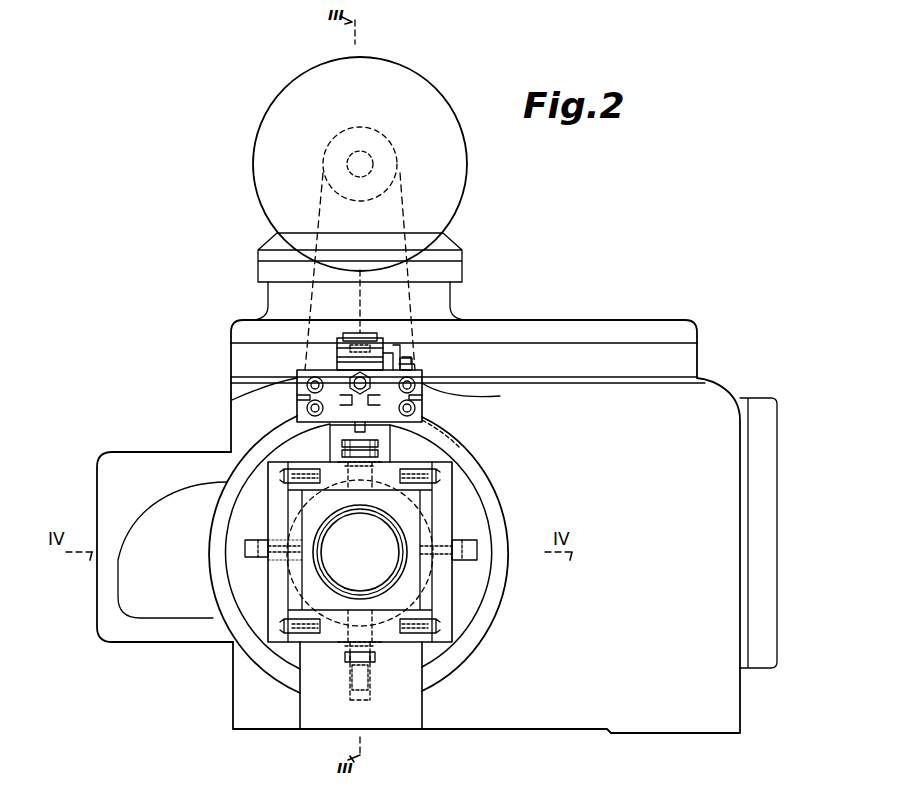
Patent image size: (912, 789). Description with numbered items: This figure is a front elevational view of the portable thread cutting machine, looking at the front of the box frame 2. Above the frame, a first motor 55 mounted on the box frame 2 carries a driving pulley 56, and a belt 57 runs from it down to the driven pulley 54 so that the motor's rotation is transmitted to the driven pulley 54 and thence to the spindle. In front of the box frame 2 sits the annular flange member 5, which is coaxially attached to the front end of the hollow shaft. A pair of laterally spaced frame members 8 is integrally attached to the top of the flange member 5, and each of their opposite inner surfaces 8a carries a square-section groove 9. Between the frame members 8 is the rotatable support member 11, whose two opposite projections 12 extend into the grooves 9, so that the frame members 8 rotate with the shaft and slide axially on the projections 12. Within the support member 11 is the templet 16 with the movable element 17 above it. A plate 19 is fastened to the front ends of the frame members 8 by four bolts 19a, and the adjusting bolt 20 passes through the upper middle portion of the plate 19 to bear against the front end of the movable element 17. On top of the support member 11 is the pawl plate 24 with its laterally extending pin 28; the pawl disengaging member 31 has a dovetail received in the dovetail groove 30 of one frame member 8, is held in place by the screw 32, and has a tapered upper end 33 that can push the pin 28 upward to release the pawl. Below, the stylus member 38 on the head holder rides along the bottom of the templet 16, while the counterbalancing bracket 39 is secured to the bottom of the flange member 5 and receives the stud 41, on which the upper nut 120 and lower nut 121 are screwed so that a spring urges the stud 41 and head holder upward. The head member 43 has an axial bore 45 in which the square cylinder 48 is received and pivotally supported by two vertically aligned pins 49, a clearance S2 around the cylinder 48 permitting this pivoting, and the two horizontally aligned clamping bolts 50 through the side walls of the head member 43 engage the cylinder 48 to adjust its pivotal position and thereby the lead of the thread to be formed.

The box frame 2 is at (672, 325).
The annular flange member 5 is at (482, 530).
The frame members 8 is at (467, 453).
The inner surfaces of the frame members 8a is at (268, 425).
The grooves 9 is at (298, 400).
The rotatable support member 11 is at (302, 413).
The projections 12 is at (300, 366).
The templet 16 is at (293, 443).
The movable element 17 is at (340, 330).
The plate 19 is at (430, 387).
The bolts 19a is at (298, 382).
The adjusting bolt 20 is at (353, 377).
The pawl plate 24 is at (360, 330).
The pin 28 is at (387, 333).
The dovetail groove 30 is at (417, 362).
The pawl disengaging member 31 is at (403, 350).
The screw 32 is at (420, 353).
The tapered upper end 33 is at (397, 352).
The stylus member 38 is at (380, 447).
The counterbalancing bracket 39 is at (418, 730).
The stud 41 is at (365, 702).
The head member 43 is at (447, 597).
The axial bore 45 is at (433, 527).
The square cylinder 48 is at (323, 605).
The pins 49 is at (380, 487).
The clamping bolts 50 is at (247, 552).
The driven pulley 54 is at (480, 482).
The first motor 55 is at (460, 137).
The driving pulley 56 is at (390, 138).
The belt 57 is at (405, 210).
The upper nut 120 is at (357, 652).
The lower nut 121 is at (372, 655).
The clearance S2 is at (480, 657).